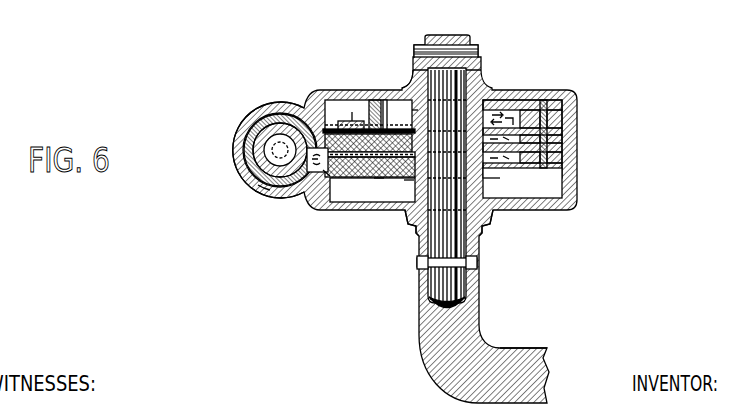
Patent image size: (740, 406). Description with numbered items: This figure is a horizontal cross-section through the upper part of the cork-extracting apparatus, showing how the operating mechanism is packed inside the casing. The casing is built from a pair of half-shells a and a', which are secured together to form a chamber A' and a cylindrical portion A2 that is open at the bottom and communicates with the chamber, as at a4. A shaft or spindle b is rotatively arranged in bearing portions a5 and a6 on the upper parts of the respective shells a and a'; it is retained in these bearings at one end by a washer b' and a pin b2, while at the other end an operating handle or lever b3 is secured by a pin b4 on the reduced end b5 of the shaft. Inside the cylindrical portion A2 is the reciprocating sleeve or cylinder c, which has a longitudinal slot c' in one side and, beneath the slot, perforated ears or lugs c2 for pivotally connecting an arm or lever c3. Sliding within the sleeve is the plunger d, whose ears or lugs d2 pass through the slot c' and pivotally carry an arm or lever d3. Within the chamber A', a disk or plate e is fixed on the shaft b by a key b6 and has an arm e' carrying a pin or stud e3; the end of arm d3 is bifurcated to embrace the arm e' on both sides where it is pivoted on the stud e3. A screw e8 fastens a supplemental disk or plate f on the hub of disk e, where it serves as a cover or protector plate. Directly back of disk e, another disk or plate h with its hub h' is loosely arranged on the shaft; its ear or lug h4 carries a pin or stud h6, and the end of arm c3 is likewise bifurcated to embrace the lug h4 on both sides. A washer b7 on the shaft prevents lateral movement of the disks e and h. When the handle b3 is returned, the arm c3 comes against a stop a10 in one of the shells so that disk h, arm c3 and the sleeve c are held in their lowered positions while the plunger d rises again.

The half-shell a is at (413, 219).
The half-shell a' is at (391, 167).
The cylindrical portion A2 is at (254, 183).
The chamber A' is at (545, 150).
The communication opening a4 is at (330, 176).
The bearing portion a5 is at (409, 74).
The bearing portion a6 is at (487, 217).
The stop a10 is at (372, 104).
The shaft or spindle b is at (447, 157).
The washer b' is at (457, 51).
The pin b2 is at (472, 46).
The operating handle or lever b3 is at (515, 352).
The pin b4 is at (417, 262).
The reduced end b5 is at (447, 248).
The key b6 is at (488, 179).
The washer b7 is at (410, 181).
The sleeve or cylinder c is at (274, 172).
The slot c' is at (304, 185).
The perforated ears or lugs c2 is at (368, 115).
The arm or lever c3 is at (386, 104).
The plunger d is at (253, 135).
The perforated ears or lugs d2 is at (320, 178).
The arm or lever d3 is at (576, 133).
The disk or plate e is at (368, 143).
The arm e' is at (544, 153).
The pin or stud e3 is at (576, 140).
The screw e8 is at (378, 178).
The supplemental disk or plate f is at (352, 178).
The disk or plate h is at (514, 97).
The hub h' is at (406, 112).
The ear or lug h4 is at (566, 120).
The pin or stud h6 is at (545, 100).